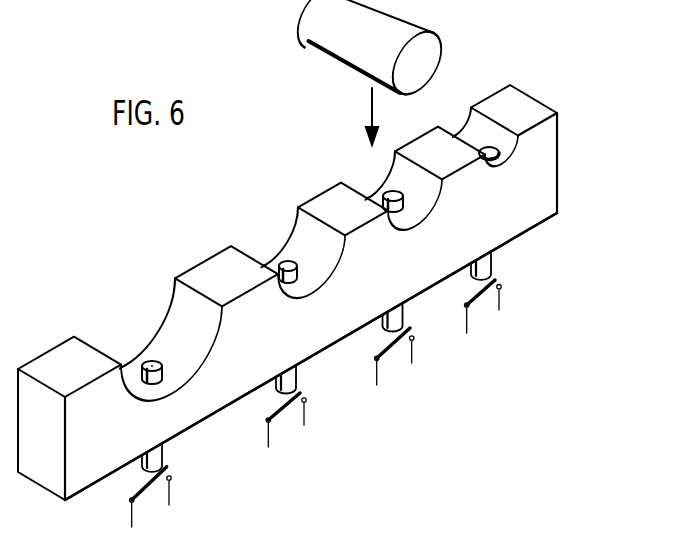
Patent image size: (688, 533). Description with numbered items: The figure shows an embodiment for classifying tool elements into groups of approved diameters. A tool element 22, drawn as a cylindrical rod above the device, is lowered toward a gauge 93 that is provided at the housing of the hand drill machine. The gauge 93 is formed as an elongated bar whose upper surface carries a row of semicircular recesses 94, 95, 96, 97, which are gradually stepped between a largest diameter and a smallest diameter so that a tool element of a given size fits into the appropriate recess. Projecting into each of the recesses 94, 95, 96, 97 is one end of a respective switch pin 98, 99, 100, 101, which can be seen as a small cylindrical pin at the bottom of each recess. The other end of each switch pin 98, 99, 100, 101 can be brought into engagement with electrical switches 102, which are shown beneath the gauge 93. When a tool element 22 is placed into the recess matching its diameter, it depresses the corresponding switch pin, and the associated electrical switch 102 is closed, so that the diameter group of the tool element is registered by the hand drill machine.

The rod 22 is at (342, 31).
The gauge 93 is at (548, 160).
The semicircular recess 94 is at (104, 343).
The semicircular recess 95 is at (262, 253).
The semicircular recess 96 is at (362, 183).
The semicircular recess 97 is at (478, 130).
The switch pin 98 is at (152, 364).
The switch pin 99 is at (297, 268).
The switch pin 100 is at (401, 203).
The switch pin 101 is at (490, 158).
The electrical switches 102 is at (276, 420).